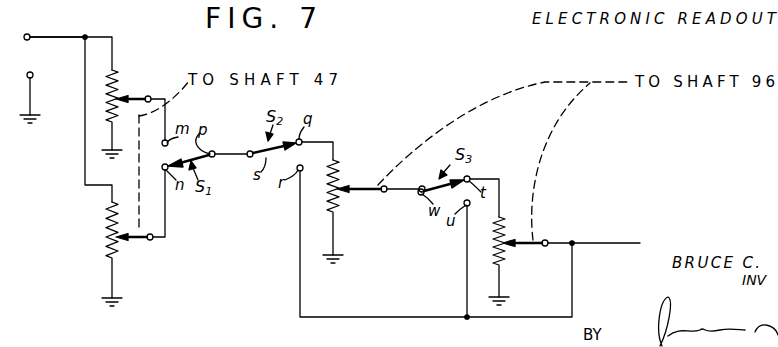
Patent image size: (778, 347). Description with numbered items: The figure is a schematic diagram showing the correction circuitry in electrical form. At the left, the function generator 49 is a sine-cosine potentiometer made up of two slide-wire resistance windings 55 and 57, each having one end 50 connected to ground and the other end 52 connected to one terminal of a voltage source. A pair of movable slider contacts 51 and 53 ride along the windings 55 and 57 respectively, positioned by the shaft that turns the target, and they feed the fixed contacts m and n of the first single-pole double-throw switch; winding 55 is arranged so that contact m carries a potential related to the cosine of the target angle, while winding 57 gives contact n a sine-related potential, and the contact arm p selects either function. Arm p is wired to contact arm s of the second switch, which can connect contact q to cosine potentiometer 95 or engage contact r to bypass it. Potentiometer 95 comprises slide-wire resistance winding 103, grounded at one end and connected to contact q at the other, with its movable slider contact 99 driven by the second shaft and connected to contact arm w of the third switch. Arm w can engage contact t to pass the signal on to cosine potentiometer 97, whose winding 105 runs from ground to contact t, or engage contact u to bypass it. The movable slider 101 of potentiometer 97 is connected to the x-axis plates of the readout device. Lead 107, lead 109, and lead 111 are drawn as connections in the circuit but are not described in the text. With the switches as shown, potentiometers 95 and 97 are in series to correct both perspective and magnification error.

The function generator 49 is at (80, 202).
The end connected to ground 50 is at (31, 100).
The movable slider contact 51 is at (130, 100).
The end connected to voltage source 52 is at (58, 36).
The movable slider contact 53 is at (135, 240).
The slide-wire resistance winding 55 is at (113, 72).
The slide-wire resistance winding 57 is at (110, 222).
The cosine potentiometer 95 is at (352, 157).
The cosine potentiometer 97 is at (519, 199).
The movable slider contact 99 is at (361, 191).
The movable slider 101 is at (524, 246).
The slide-wire resistance winding 103 is at (329, 200).
The slide-wire resistance winding 105 is at (507, 227).
The terminal lead to potentiometer 95 107 is at (333, 140).
The terminal lead to potentiometer 105 109 is at (496, 179).
The output lead 111 is at (467, 273).